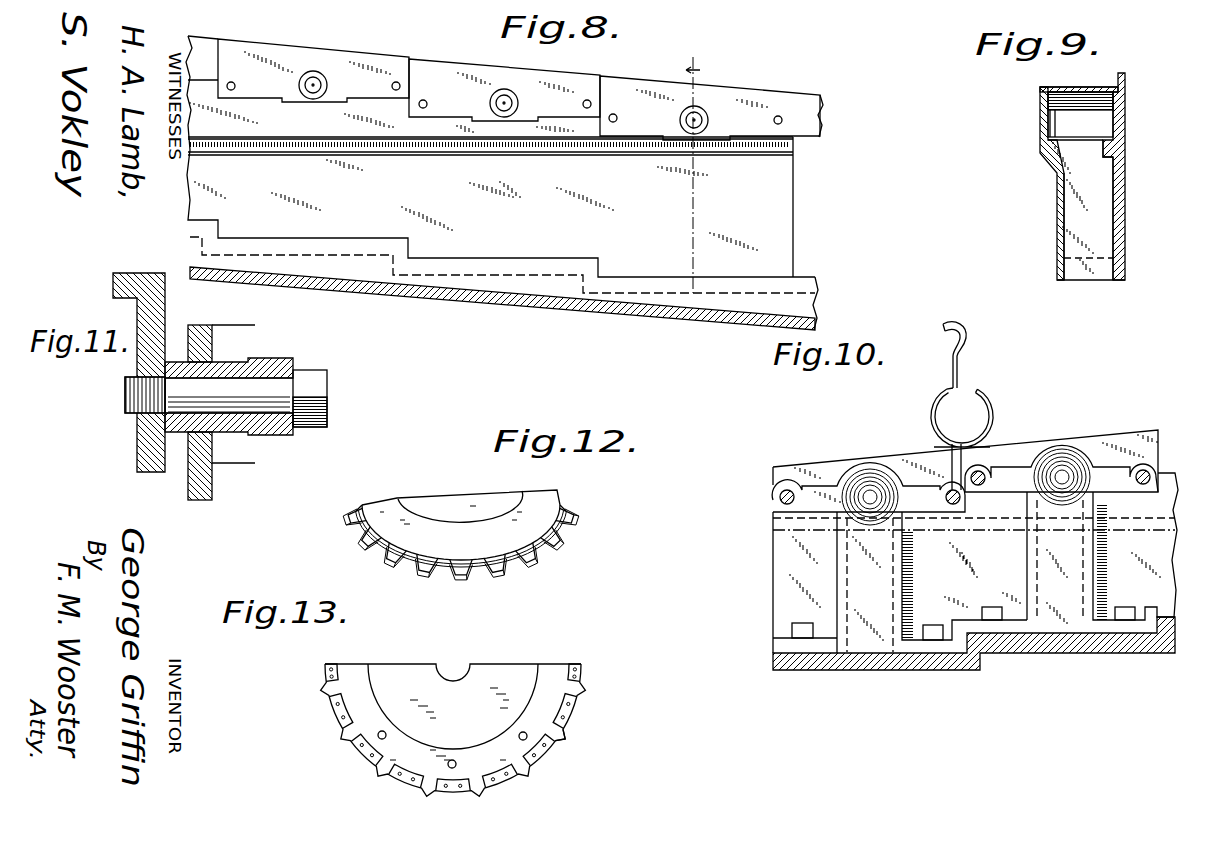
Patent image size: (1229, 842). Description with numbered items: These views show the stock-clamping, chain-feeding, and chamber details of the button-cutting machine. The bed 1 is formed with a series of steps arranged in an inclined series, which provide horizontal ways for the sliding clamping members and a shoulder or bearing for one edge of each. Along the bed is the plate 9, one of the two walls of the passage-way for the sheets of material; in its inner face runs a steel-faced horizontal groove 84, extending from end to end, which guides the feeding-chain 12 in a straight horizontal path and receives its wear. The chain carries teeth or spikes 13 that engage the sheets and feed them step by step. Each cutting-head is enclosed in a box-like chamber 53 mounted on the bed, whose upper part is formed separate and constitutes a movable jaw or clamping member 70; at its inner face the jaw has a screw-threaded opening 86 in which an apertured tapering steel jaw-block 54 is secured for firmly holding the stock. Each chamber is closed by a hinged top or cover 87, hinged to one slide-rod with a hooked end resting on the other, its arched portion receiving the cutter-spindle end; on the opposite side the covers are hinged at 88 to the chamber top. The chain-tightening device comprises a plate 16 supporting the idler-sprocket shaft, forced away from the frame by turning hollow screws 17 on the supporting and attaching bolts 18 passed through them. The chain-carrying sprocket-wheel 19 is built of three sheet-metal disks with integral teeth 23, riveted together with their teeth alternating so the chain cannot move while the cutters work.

In FIG. 10, the bed 1 is at (787, 656).
In FIG. 11, the bed 1 is at (135, 273).
In FIG. 8, the plate 9 is at (504, 189).
In FIG. 9, the plate 9 is at (1125, 222).
In FIG. 10, the plate 9 is at (975, 563).
In FIG. 13, the feeding-chain 12 is at (330, 706).
In FIG. 13, the teeth or spikes 13 is at (566, 739).
In FIG. 11, the plate 16 is at (192, 485).
In FIG. 11, the hollow screws 17 is at (276, 430).
In FIG. 11, the supporting and attaching bolts 18 is at (209, 396).
In FIG. 12, the sprocket-wheel 19 is at (492, 530).
In FIG. 13, the sprocket-wheel 19 is at (453, 706).
In FIG. 12, the integral teeth 23 is at (383, 542).
In FIG. 13, the integral teeth 23 is at (566, 690).
In FIG. 9, the box-like chamber 53 is at (1075, 212).
In FIG. 10, the box-like chamber 53 is at (965, 576).
In FIG. 8, the apertured tapering jaw-blocks 54 is at (518, 103).
In FIG. 10, the apertured tapering jaw-blocks 54 is at (878, 497).
In FIG. 8, the movable jaw or clamping member 70 is at (590, 78).
In FIG. 9, the movable jaw or clamping member 70 is at (1080, 105).
In FIG. 10, the movable jaw or clamping member 70 is at (855, 465).
In FIG. 8, the horizontal groove 84 is at (493, 148).
In FIG. 9, the horizontal groove 84 is at (1115, 152).
In FIG. 10, the horizontal groove 84 is at (773, 527).
In FIG. 9, the screw-threaded opening 86 is at (1120, 120).
In FIG. 9, the hinged top or cover 87 is at (1053, 88).
In FIG. 10, the hinged top or cover 87 is at (992, 410).
In FIG. 10, the hinge 88 is at (965, 503).